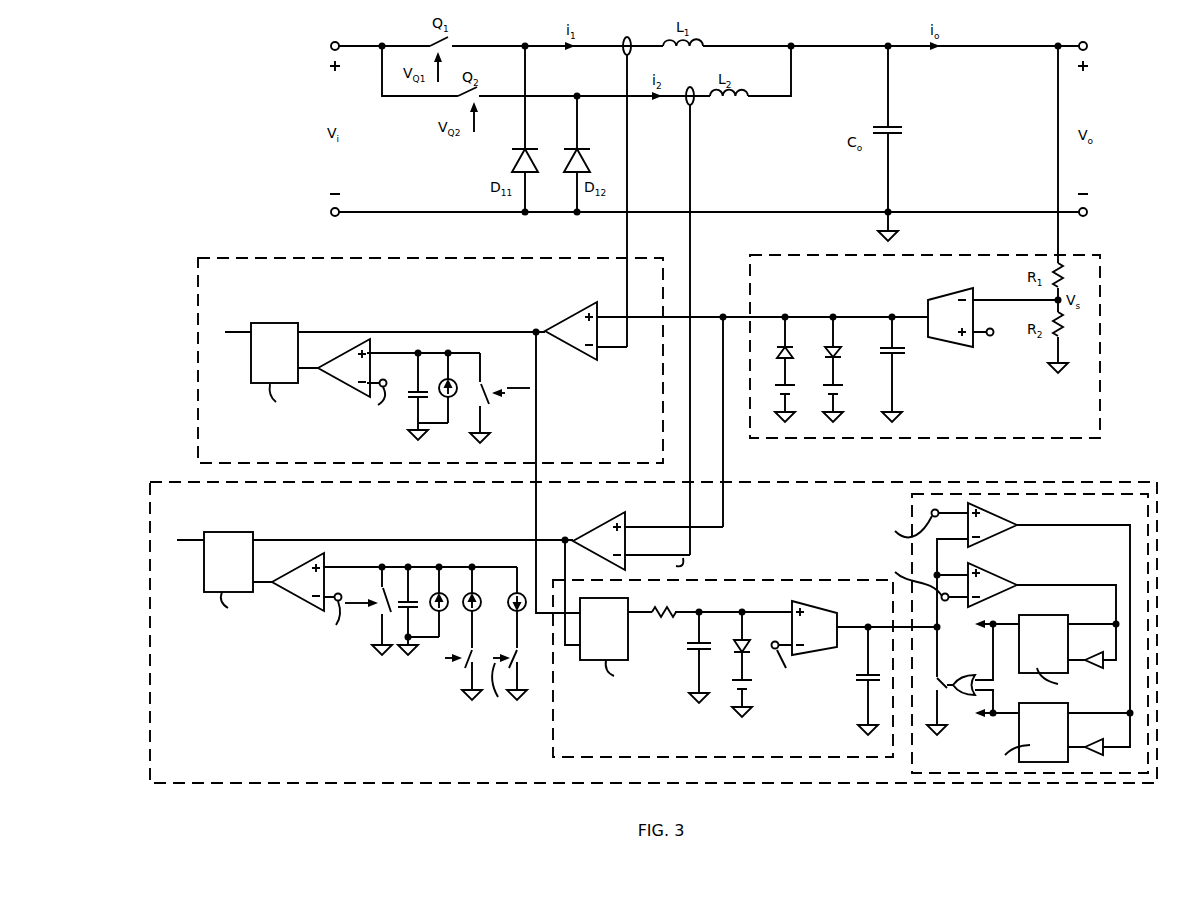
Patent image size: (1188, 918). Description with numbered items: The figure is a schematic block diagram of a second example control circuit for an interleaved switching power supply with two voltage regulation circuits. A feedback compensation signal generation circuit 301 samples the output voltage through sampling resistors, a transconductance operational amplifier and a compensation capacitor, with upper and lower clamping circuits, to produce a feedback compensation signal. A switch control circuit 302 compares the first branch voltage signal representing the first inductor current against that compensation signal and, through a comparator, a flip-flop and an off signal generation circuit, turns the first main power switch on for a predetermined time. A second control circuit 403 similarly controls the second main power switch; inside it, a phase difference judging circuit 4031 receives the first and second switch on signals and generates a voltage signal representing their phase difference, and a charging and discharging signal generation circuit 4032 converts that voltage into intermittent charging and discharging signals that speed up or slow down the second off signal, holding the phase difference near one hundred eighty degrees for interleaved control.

The feedback compensation signal generation circuit 301 is at (1086, 421).
The switch control circuit 302 is at (236, 455).
The second example control circuit 403 is at (186, 780).
The phase difference judging circuit 4031 is at (601, 751).
The charging and discharging signal generation circuit 4032 is at (953, 768).